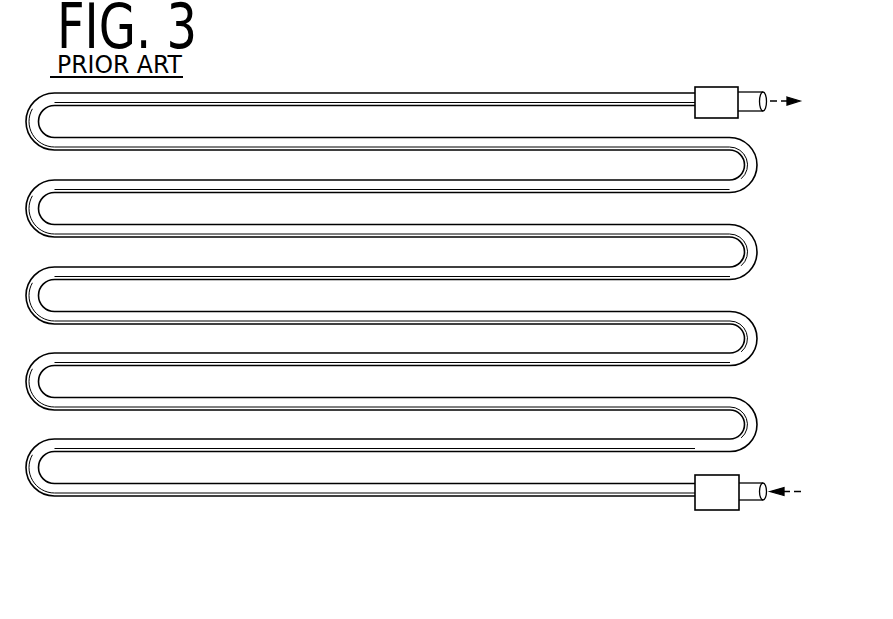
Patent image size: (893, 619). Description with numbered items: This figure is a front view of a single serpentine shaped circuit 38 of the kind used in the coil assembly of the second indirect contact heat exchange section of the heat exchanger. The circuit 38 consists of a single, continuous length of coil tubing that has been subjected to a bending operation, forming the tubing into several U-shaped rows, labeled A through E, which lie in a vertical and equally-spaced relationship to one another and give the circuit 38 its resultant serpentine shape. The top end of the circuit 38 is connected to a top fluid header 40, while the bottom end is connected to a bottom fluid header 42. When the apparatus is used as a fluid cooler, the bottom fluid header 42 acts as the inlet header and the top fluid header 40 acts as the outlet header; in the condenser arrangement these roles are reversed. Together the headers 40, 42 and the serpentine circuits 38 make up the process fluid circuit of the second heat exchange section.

The serpentine circuit 38 is at (402, 98).
The top fluid header 40 is at (722, 93).
The bottom fluid header 42 is at (722, 506).